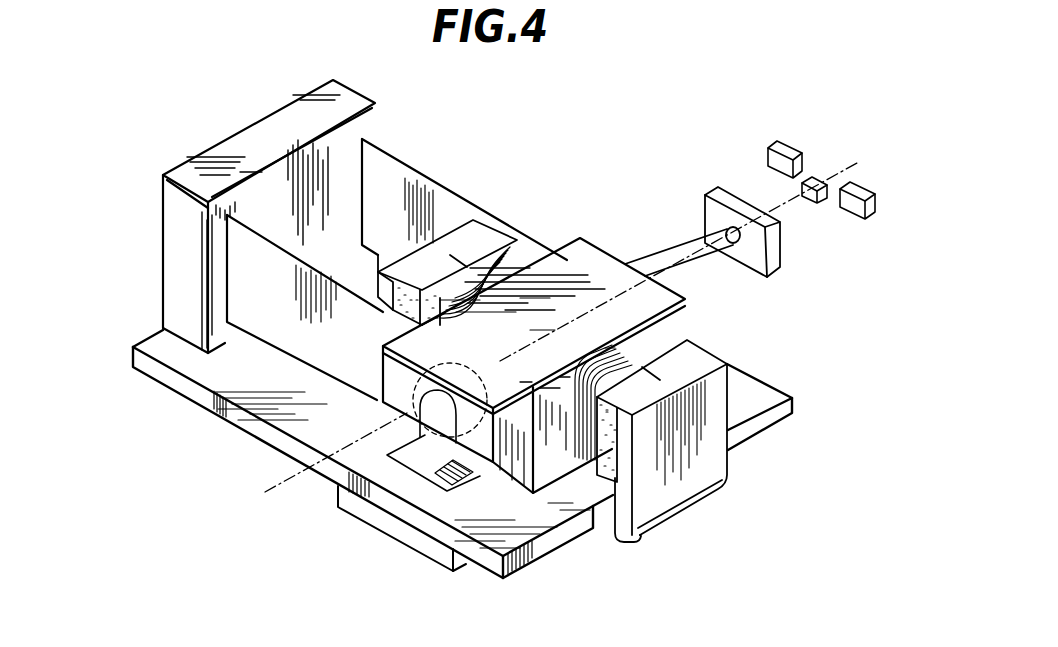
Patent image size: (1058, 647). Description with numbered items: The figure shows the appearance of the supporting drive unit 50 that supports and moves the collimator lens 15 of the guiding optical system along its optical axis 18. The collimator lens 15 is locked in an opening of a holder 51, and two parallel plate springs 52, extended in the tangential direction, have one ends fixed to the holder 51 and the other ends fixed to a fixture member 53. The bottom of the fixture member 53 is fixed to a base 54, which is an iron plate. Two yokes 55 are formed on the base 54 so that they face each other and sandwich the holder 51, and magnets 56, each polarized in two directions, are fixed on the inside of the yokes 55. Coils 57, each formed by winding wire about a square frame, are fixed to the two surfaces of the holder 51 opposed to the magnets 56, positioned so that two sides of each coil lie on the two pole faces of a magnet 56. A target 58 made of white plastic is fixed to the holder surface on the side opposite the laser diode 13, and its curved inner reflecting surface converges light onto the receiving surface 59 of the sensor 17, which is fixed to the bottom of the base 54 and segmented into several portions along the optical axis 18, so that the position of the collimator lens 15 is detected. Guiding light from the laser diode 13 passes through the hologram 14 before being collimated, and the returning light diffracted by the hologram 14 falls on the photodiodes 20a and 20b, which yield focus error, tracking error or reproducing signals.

The laser diode 13 is at (820, 178).
The hologram 14 is at (780, 262).
The collimator lens 15 is at (484, 420).
The sensor 17 is at (365, 510).
The optical axis 18 is at (282, 487).
The photodiode 20a is at (768, 152).
The photodiode 20b is at (860, 220).
The supporting drive unit 50 is at (226, 507).
The holder 51 is at (610, 267).
The parallel plate springs 52 is at (442, 180).
The fixture member 53 is at (180, 235).
The base 54 is at (237, 418).
The yokes 55 is at (477, 230).
The magnets 56 is at (500, 242).
The coils 57 is at (520, 245).
The target 58 is at (368, 415).
The receiving surface 59 is at (447, 482).